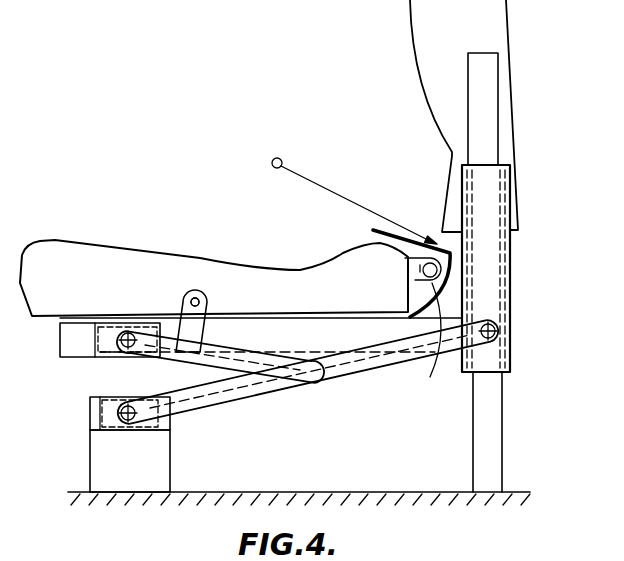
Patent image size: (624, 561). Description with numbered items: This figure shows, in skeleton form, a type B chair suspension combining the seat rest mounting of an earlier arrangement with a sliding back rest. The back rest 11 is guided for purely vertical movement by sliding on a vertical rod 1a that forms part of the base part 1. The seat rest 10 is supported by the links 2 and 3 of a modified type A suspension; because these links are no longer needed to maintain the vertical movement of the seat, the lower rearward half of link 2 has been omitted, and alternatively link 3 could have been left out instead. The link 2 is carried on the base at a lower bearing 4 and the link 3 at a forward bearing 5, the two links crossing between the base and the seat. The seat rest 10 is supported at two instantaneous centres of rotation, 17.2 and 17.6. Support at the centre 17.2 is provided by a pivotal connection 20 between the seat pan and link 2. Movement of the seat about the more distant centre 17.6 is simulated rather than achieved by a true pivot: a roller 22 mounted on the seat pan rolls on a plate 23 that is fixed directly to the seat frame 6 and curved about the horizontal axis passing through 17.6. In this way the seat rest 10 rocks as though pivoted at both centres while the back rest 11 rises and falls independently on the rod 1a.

The base part 1 is at (134, 474).
The vertical rod 1a is at (504, 404).
The link 2 is at (217, 363).
The link 3 is at (228, 392).
The lower pivot bearing 4 is at (118, 418).
The upper pivot bearing 5 is at (100, 360).
The seat frame 6 is at (332, 349).
The seat rest 10 is at (82, 299).
The back rest 11 is at (475, 22).
The instantaneous centre of rotation I7.2 17.2 is at (201, 299).
The instantaneous centre of rotation I7.6 17.6 is at (290, 146).
The pivotal connection 20 is at (186, 297).
The roller 22 is at (398, 266).
The plate 23 is at (432, 348).